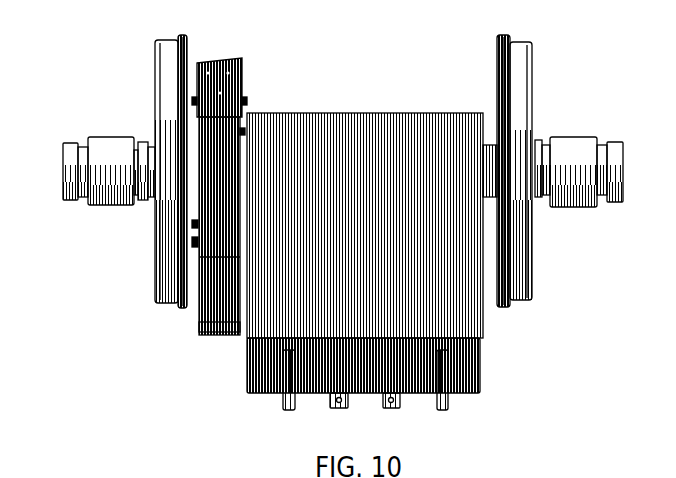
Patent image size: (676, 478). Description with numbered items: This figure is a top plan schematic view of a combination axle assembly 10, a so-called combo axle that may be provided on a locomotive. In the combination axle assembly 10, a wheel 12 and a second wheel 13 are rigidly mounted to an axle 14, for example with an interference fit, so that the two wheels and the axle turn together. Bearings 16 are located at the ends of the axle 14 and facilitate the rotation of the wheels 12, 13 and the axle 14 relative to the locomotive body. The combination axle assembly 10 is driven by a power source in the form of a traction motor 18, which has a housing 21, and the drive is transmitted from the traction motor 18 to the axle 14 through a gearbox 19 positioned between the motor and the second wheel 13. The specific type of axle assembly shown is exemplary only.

The combination axle assembly 10 is at (570, 70).
The wheel 12 is at (530, 270).
The second wheel 13 is at (155, 277).
The axle 14 is at (492, 153).
The bearings 16 is at (103, 140).
The traction motor 18 is at (340, 113).
The gearbox 19 is at (210, 337).
The housing 21 is at (383, 200).